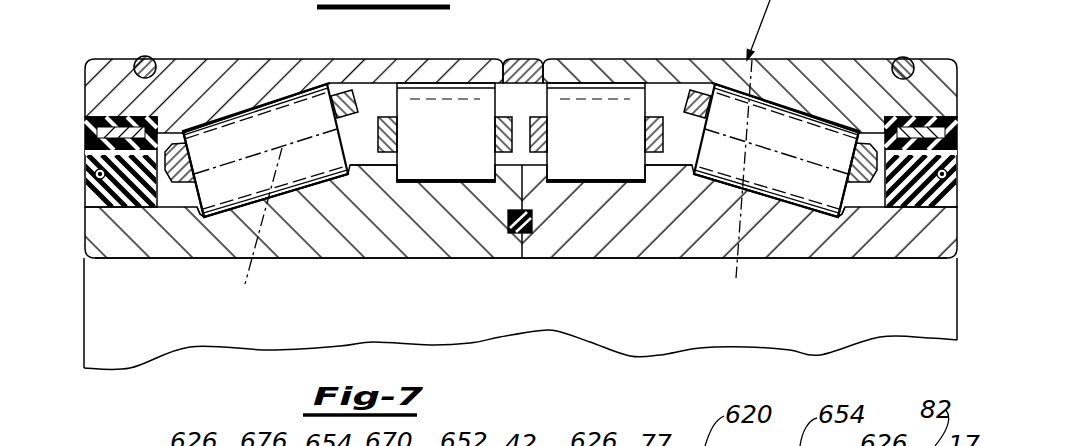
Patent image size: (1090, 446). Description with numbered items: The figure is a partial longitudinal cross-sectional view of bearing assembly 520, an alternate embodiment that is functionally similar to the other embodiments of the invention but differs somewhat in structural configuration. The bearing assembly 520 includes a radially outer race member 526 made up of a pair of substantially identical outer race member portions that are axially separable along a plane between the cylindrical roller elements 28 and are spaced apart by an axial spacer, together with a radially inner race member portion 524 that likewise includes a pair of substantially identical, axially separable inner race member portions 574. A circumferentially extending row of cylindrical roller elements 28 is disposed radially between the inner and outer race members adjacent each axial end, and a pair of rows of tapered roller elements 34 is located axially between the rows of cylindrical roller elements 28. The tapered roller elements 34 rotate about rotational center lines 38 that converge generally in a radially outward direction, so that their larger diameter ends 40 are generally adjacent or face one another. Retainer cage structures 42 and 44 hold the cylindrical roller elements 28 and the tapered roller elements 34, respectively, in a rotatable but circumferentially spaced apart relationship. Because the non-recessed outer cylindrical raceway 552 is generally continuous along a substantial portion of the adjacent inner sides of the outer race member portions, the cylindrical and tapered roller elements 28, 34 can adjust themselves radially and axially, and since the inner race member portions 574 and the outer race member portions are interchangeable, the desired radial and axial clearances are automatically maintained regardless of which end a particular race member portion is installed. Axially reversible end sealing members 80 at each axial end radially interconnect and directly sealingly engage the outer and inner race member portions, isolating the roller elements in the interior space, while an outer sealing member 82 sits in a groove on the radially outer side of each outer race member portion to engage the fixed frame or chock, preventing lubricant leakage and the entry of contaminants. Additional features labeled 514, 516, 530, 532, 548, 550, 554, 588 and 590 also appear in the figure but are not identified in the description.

The cylindrical roller elements 28 is at (358, 181).
The tapered roller elements 34 is at (200, 216).
The rotational center lines 38 is at (753, 60).
The larger diameter ends 40 is at (349, 170).
The retainer cage structures 42 is at (378, 133).
The retainer cage structures 44 is at (700, 140).
The end sealing members 80 is at (85, 220).
The outer sealing member 82 is at (153, 58).
The inner raceway 514 is at (328, 186).
The outer ring 516 is at (236, 66).
The bearing assembly 520 is at (748, 14).
The radially inner race member portion 524 is at (150, 262).
The radially outer race member 526 is at (484, 57).
The housing 530 is at (82, 258).
The housing wall 532 is at (957, 300).
The race shoulder 548 is at (581, 176).
The roller end face 550 is at (228, 219).
The non-recessed outer cylindrical raceway 552 is at (393, 84).
The outer raceway 554 is at (279, 104).
The inner race member portions 574 is at (828, 206).
The center post 588 is at (520, 168).
The key block 590 is at (510, 234).